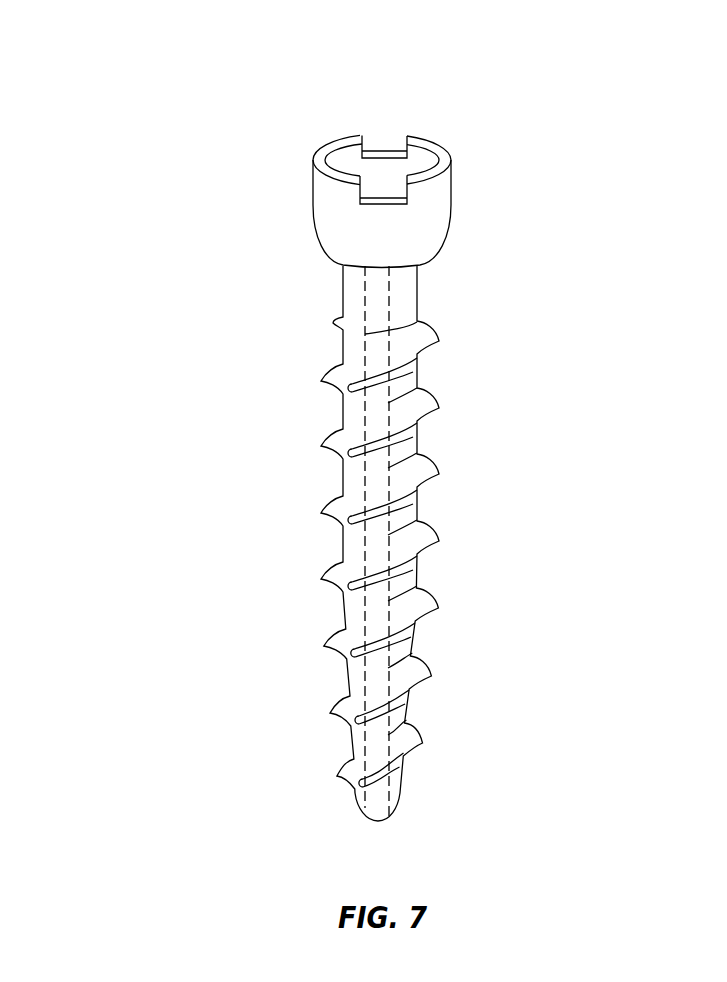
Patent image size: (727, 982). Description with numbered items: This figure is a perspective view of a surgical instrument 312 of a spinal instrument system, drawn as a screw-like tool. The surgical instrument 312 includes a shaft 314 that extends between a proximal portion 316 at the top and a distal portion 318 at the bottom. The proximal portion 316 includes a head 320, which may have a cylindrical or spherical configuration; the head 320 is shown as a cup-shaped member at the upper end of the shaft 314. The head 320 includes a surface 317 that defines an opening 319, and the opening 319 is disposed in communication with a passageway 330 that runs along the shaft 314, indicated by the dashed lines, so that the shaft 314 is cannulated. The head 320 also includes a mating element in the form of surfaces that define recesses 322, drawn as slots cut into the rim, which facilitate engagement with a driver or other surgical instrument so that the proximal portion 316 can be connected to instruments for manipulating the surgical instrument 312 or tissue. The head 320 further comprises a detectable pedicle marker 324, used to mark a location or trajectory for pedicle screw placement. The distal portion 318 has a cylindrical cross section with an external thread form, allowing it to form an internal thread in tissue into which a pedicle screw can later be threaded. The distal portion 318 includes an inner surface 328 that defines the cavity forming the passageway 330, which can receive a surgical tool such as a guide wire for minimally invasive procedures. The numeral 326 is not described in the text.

The surgical instrument 312 is at (98, 48).
The shaft 314 is at (492, 514).
The proximal portion 316 is at (490, 202).
The surface 317 is at (398, 152).
The distal portion 318 is at (472, 722).
The opening 319 is at (373, 160).
The head 320 is at (258, 196).
The recesses 322 is at (363, 150).
The pedicle marker 324 is at (433, 195).
The distal end 326 is at (275, 690).
The inner surface 328 is at (414, 397).
The passageway 330 is at (380, 316).